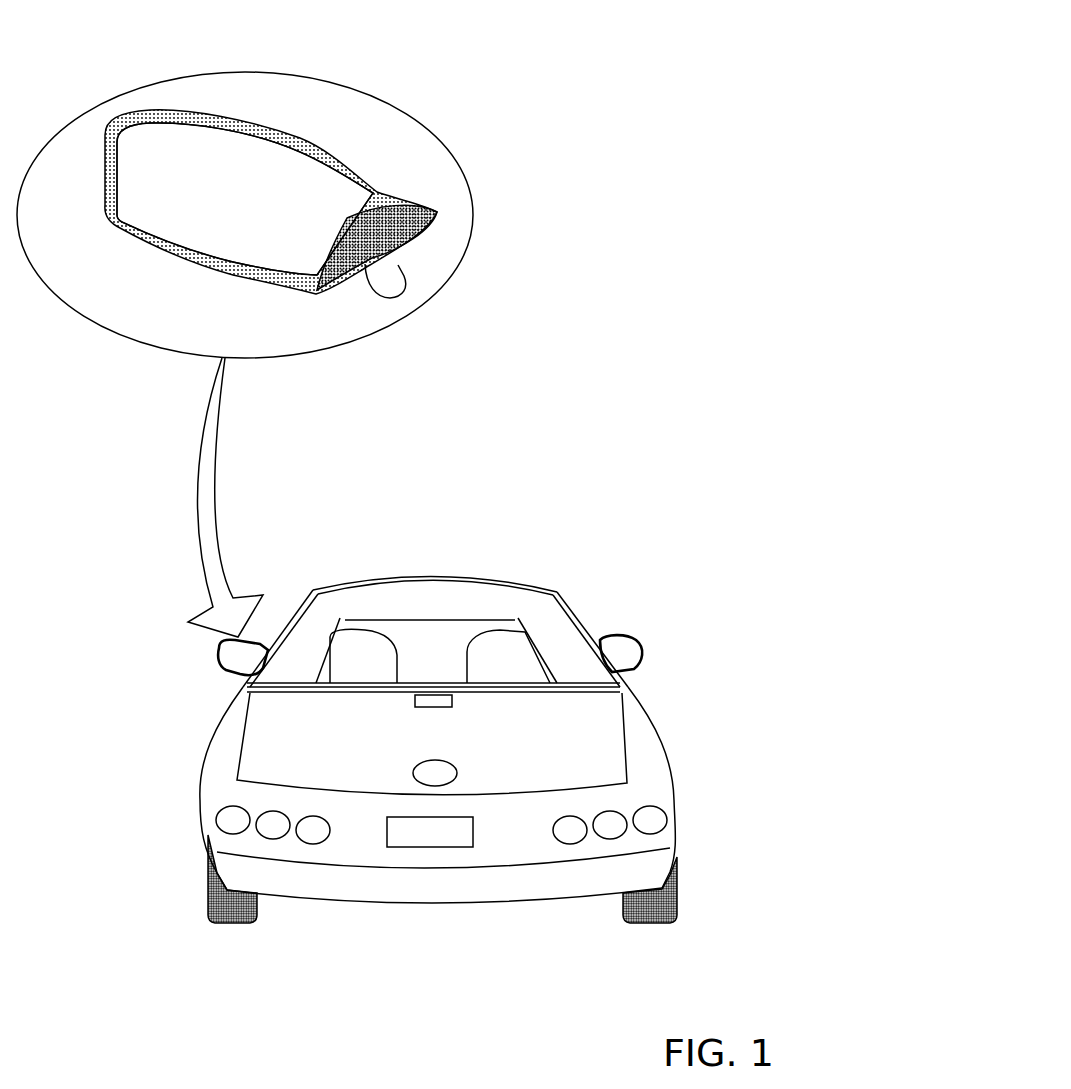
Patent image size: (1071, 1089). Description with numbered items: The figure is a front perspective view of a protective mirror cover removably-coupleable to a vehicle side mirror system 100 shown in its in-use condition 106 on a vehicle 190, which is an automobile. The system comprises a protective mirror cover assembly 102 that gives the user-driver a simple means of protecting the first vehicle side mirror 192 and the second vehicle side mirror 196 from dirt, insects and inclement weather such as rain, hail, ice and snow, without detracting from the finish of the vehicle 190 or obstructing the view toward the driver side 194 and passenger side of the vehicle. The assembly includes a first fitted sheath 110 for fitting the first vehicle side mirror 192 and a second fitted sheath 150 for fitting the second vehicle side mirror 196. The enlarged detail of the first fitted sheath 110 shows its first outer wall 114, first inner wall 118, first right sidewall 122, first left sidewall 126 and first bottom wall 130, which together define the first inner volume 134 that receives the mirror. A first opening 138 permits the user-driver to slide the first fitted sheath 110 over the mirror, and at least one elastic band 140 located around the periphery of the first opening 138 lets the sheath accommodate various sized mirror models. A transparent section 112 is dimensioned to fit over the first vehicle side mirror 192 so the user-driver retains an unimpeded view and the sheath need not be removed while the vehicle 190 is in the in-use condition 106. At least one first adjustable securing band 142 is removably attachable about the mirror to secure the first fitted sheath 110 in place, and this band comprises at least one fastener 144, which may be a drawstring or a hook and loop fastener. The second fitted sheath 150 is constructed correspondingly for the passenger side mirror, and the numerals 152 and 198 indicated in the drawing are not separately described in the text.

The protective mirror cover removably-coupleable to a vehicle side mirror system 100 is at (634, 62).
The protective mirror cover assembly 102 is at (648, 102).
The in-use condition 106 is at (657, 155).
The first fitted sheath 110 is at (187, 105).
The transparent section 112 is at (245, 199).
The first outer wall 114 is at (152, 258).
The first inner wall 118 is at (347, 266).
The first right sidewall 122 is at (332, 153).
The first left sidewall 126 is at (210, 274).
The first bottom wall 130 is at (318, 297).
The first inner volume 134 is at (369, 252).
The first opening 138 is at (401, 228).
The elastic band 140 is at (434, 220).
The first adjustable securing band 142 is at (416, 207).
The fastener 144 is at (403, 303).
The second fitted sheath 150 is at (618, 637).
The passenger side mirror housing 152 is at (648, 642).
The vehicle 190 is at (674, 770).
The first vehicle side mirror 192 is at (228, 675).
The driver side 194 is at (352, 622).
The second vehicle side mirror 196 is at (638, 673).
The passenger side rear pillar 198 is at (515, 622).